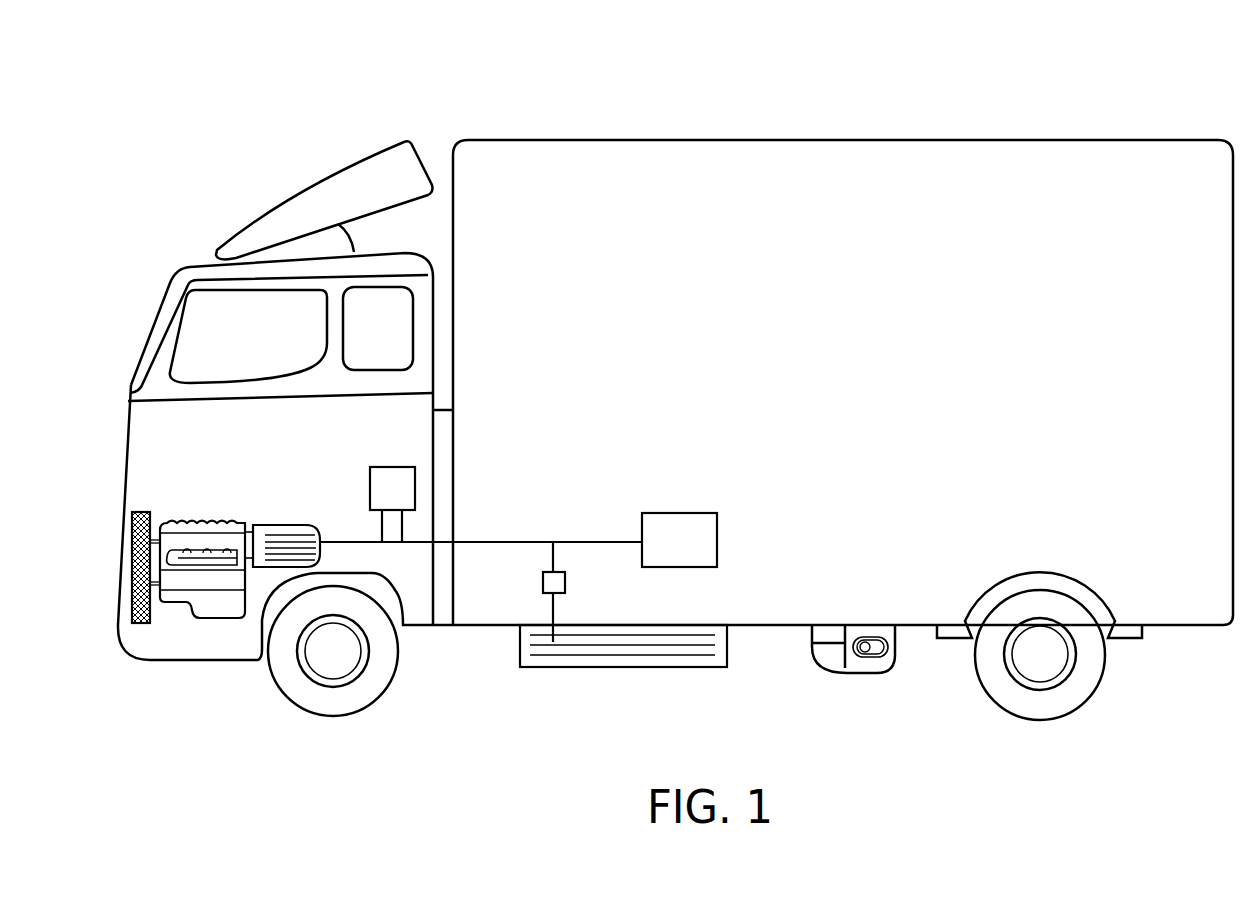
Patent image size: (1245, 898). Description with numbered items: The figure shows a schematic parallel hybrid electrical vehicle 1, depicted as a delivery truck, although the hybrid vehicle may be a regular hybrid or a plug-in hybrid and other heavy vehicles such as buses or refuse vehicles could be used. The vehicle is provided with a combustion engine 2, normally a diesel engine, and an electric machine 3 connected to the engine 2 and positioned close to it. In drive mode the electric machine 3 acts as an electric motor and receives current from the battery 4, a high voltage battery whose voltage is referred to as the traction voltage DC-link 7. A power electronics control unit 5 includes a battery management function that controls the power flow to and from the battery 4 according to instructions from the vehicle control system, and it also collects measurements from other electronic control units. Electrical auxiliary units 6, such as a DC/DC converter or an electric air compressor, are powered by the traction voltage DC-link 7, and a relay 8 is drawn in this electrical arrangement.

The parallel hybrid electrical vehicle 1 is at (675, 366).
The combustion engine 2 is at (182, 583).
The electric machine 3 is at (292, 526).
The battery 4 is at (623, 650).
The power electronics control unit 5 is at (370, 490).
The electrical auxiliary units 6 is at (708, 537).
The traction voltage DC-link 7 is at (515, 542).
The relay 8 is at (543, 580).